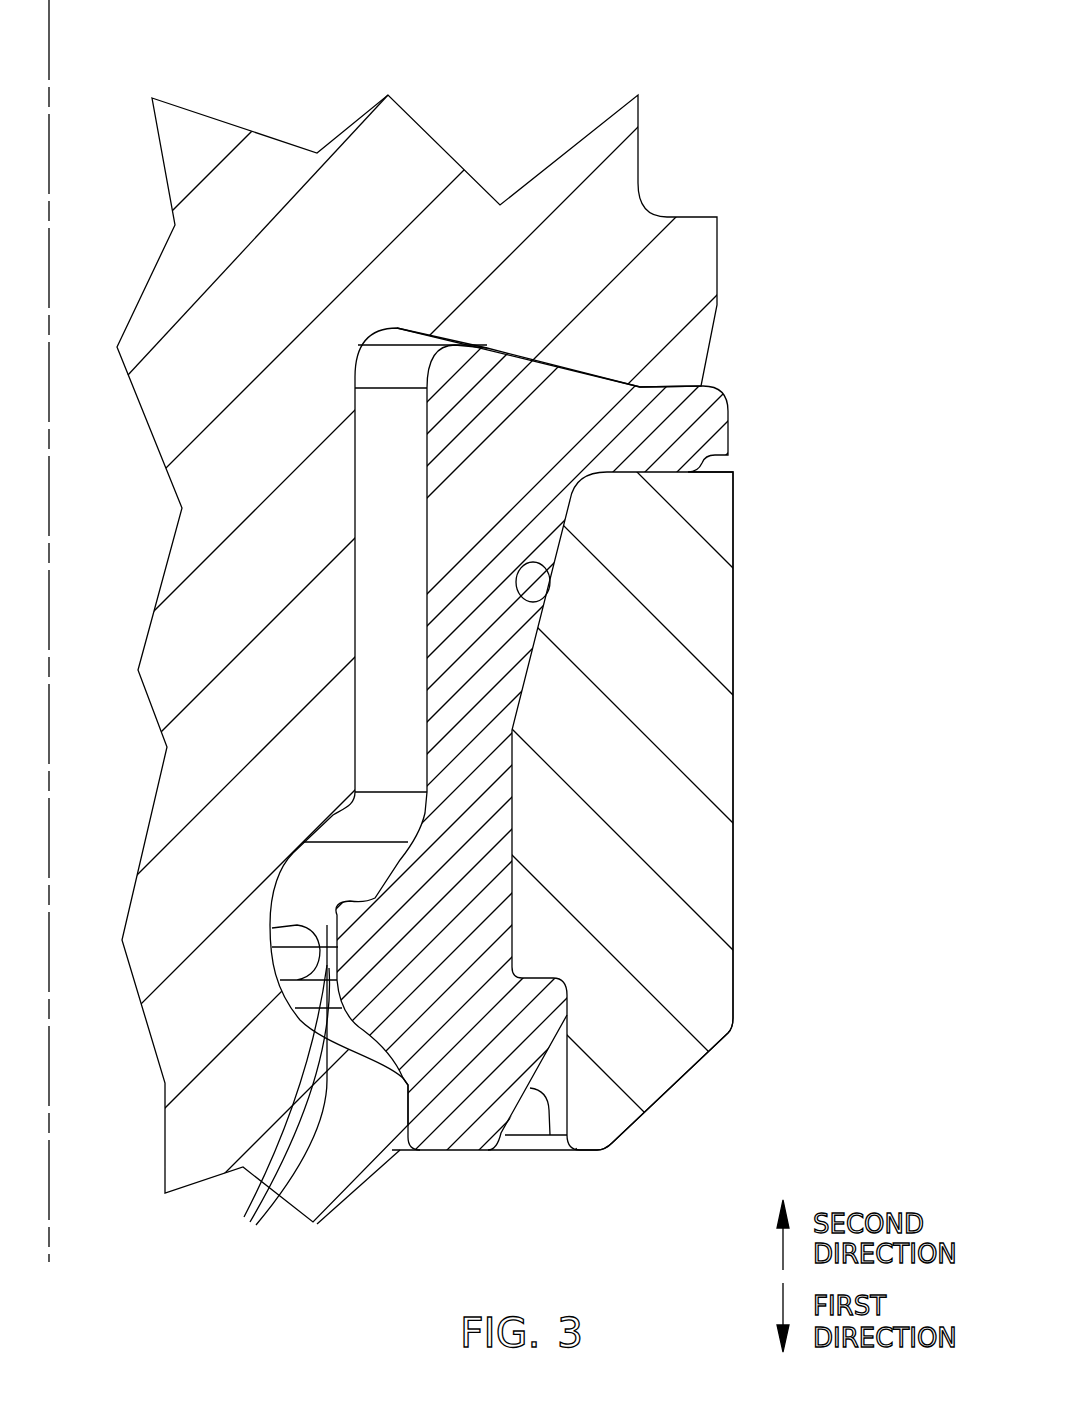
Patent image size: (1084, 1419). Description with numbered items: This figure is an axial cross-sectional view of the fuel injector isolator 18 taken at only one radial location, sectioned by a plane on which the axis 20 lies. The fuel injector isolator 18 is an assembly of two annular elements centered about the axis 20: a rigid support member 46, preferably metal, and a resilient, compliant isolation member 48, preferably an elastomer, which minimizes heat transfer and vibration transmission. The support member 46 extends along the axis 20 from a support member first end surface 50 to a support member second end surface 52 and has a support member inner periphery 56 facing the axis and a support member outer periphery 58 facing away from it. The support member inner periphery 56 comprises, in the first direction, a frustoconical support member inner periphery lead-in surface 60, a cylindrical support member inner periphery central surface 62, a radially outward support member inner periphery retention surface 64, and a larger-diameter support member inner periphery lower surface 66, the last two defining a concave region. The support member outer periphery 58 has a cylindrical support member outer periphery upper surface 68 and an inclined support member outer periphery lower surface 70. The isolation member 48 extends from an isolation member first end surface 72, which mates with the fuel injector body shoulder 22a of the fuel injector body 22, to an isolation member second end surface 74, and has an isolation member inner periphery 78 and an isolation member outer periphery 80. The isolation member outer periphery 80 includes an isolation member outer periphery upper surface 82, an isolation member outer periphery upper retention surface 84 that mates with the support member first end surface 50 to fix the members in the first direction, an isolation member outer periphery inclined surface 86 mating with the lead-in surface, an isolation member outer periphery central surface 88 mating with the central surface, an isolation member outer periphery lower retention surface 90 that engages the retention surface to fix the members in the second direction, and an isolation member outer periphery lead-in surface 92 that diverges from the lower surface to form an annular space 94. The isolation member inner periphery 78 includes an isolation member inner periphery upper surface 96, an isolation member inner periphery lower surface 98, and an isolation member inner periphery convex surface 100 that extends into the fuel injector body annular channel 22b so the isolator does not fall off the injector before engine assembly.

The fuel injector isolator 18 is at (772, 378).
The axis 20 is at (50, 32).
The fuel injector body 22 is at (620, 207).
The fuel injector body shoulder 22a is at (556, 352).
The fuel injector body annular channel 22b is at (272, 985).
The support member 46 is at (647, 800).
The isolation member 48 is at (448, 931).
The support member first end surface 50 is at (728, 454).
The support member second end surface 52 is at (590, 1152).
The support member inner periphery 56 is at (523, 677).
The support member outer periphery 58 is at (733, 740).
The support member inner periphery lead-in surface 60 is at (545, 566).
The support member inner periphery central surface 62 is at (512, 877).
The support member inner periphery retention surface 64 is at (567, 1015).
The support member inner periphery lower surface 66 is at (567, 1069).
The support member outer periphery upper surface 68 is at (733, 542).
The support member outer periphery lower surface 70 is at (648, 1104).
The isolation member first end surface 72 is at (583, 370).
The isolation member second end surface 74 is at (460, 1152).
The isolation member inner periphery 78 is at (421, 740).
The isolation member outer periphery 80 is at (512, 787).
The isolation member outer periphery upper surface 82 is at (728, 428).
The isolation member outer periphery upper retention surface 84 is at (657, 473).
The isolation member outer periphery inclined surface 86 is at (535, 642).
The isolation member outer periphery central surface 88 is at (512, 915).
The isolation member outer periphery lower retention surface 90 is at (538, 978).
The isolation member outer periphery lead-in surface 92 is at (542, 1150).
The annular space 94 is at (560, 1110).
The isolation member inner periphery upper surface 96 is at (427, 537).
The isolation member inner periphery lower surface 98 is at (403, 1108).
The isolation member inner periphery convex surface 100 is at (271, 1107).